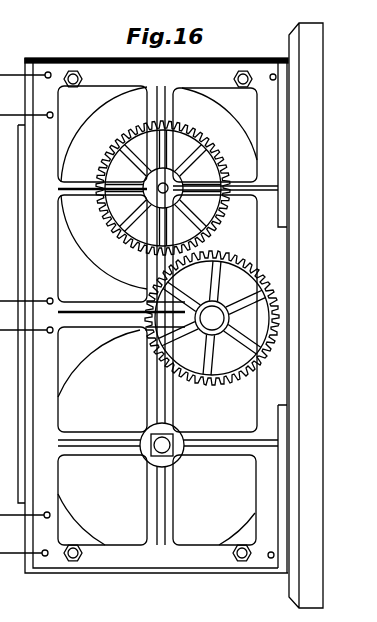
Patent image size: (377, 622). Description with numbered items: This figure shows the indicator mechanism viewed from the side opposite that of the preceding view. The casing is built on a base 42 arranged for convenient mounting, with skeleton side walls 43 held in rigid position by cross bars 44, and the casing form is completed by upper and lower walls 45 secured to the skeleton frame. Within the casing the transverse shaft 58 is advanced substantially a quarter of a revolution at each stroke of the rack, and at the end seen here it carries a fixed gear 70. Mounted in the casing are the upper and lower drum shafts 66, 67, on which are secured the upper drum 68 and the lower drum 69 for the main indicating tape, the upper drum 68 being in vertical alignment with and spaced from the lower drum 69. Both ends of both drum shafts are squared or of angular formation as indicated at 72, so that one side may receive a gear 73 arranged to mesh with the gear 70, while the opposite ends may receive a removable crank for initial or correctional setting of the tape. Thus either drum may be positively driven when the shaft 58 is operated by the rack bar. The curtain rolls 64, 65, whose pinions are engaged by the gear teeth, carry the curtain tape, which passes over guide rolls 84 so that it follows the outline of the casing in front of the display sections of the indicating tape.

The base 42 is at (318, 320).
The skeleton side walls 43 is at (162, 558).
The cross bars 44 is at (73, 563).
The upper and lower walls 45 is at (68, 58).
The transverse shaft 58 is at (192, 320).
The curtain roll 64 is at (272, 275).
The curtain roll 65 is at (270, 363).
The upper drum shaft 66 is at (160, 186).
The lower drum shaft 67 is at (172, 453).
The upper drum 68 is at (101, 261).
The lower drum 69 is at (91, 357).
The fixed gear 70 is at (207, 381).
The squared shaft ends 72 is at (150, 456).
The gear 73 is at (192, 152).
The guide rolls 84 is at (273, 74).